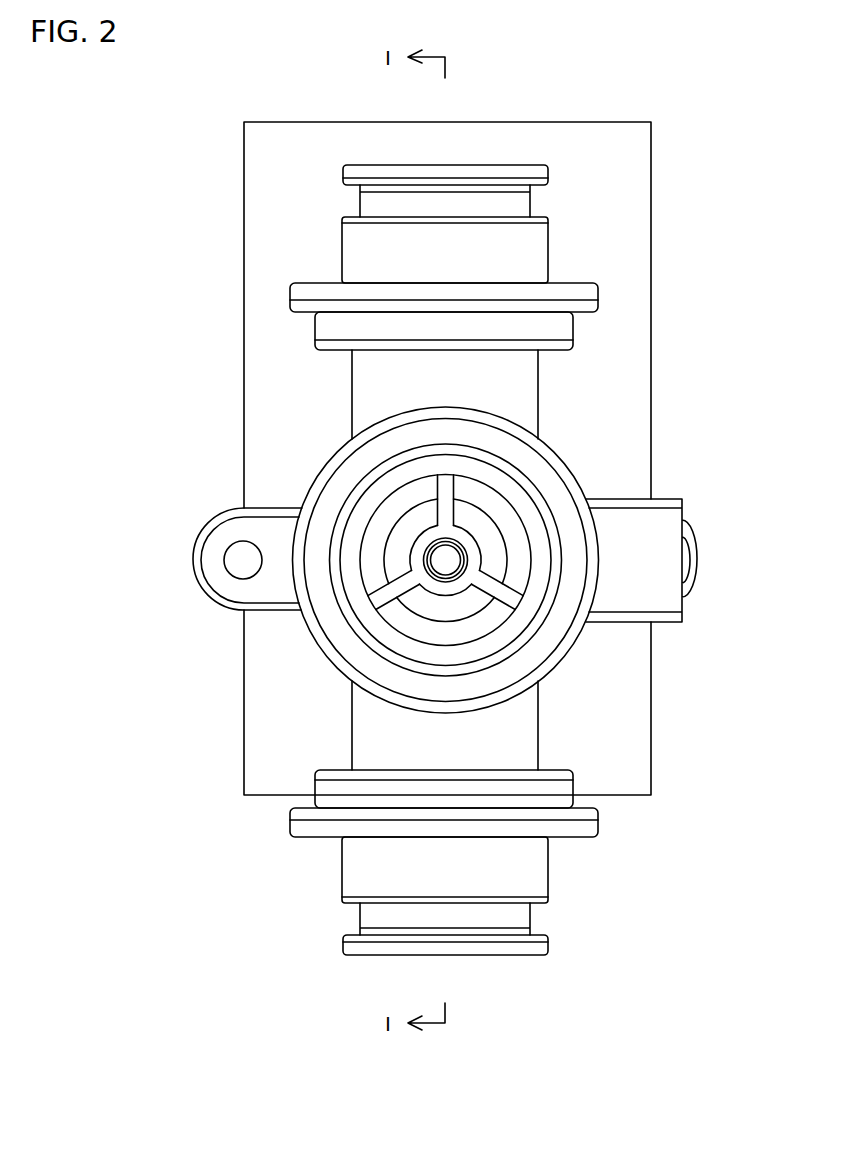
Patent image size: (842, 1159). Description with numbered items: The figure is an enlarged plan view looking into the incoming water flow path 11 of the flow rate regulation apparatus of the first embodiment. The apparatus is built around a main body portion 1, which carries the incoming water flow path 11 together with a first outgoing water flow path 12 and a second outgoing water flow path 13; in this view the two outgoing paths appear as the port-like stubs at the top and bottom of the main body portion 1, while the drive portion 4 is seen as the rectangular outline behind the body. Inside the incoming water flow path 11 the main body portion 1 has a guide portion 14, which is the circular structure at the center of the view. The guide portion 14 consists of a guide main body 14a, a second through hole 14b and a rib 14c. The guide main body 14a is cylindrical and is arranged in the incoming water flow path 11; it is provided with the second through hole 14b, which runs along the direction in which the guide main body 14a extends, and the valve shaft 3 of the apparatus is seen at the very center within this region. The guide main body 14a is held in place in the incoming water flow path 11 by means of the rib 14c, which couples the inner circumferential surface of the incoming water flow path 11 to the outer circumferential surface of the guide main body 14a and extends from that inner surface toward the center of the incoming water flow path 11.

The main body portion 1 is at (532, 256).
The valve shaft 3 is at (447, 558).
The drive portion 4 is at (607, 343).
The incoming water flow path 11 is at (462, 608).
The first outgoing water flow path 12 is at (445, 957).
The second outgoing water flow path 13 is at (443, 163).
The guide portion 14 is at (314, 514).
The guide main body 14a is at (435, 547).
The second through hole 14b is at (415, 548).
The rib 14c is at (443, 532).